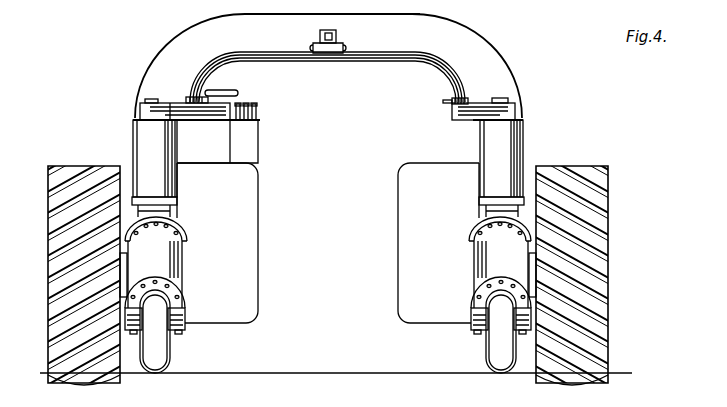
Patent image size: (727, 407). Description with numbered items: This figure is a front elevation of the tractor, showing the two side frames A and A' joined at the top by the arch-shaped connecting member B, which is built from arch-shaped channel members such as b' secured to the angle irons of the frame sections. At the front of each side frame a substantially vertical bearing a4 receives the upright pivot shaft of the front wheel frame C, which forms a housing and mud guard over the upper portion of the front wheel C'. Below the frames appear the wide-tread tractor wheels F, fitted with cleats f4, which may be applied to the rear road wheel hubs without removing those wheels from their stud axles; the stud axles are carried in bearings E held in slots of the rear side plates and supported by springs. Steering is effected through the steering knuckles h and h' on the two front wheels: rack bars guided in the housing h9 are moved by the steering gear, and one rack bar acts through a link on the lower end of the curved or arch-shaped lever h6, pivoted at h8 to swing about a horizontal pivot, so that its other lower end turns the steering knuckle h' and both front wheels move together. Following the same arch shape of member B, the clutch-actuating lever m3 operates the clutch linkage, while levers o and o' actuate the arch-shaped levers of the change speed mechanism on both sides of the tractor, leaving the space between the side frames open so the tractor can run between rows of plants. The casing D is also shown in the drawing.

The arch-shaped connecting member B is at (480, 37).
The arch-shaped channel member b' is at (397, 33).
The pivot h8 is at (325, 53).
The arch-shaped lever h6 is at (388, 63).
The clutch-actuating lever m3 is at (240, 96).
The lever o' is at (262, 103).
The lever o is at (271, 121).
The steering knuckle h is at (185, 126).
The steering knuckle h' is at (470, 122).
The housing h9 is at (217, 122).
The front wheel frame C is at (332, 104).
The side frame A is at (179, 128).
The side frame A' is at (517, 138).
The vertical bearing a4 is at (514, 150).
The casing D is at (328, 243).
The front wheel C' is at (328, 285).
The bearing E is at (120, 271).
The tractor wheel F is at (315, 275).
The cleats f4 is at (72, 195).